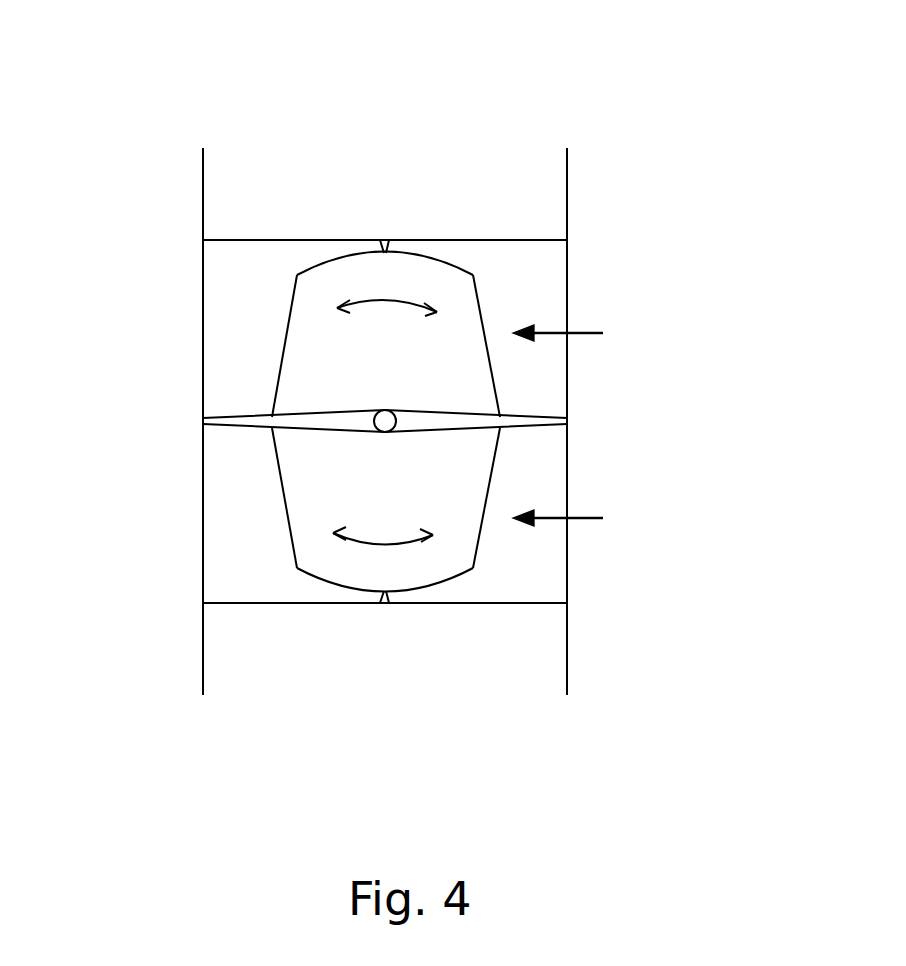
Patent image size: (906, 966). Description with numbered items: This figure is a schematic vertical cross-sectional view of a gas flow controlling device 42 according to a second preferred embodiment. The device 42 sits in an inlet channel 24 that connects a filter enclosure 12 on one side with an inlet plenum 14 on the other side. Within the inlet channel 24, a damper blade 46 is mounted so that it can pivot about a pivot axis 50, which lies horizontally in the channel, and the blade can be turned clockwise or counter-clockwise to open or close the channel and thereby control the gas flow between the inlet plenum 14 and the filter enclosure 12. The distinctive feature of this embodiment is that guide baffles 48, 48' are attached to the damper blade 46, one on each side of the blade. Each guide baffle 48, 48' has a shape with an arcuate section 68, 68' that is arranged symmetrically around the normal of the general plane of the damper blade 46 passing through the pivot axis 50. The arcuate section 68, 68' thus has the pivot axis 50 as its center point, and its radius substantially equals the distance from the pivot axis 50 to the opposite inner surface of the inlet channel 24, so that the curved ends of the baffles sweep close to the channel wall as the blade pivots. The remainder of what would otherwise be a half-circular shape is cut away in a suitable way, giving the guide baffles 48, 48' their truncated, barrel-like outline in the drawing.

The filter enclosure 12 is at (140, 167).
The inlet plenum 14 is at (708, 168).
The inlet channel 24 is at (320, 603).
The gas flow controlling device 42 is at (470, 158).
The damper blade 46 is at (298, 413).
The guide baffle 48 is at (494, 335).
The guide baffle 48' is at (495, 510).
The pivot axis 50 is at (382, 433).
The arcuate section 68 is at (327, 174).
The arcuate section 68' is at (464, 666).